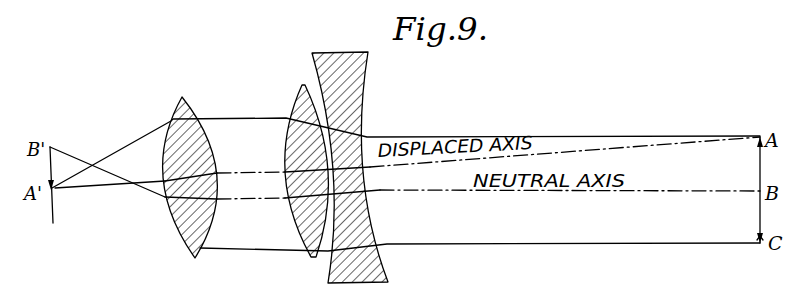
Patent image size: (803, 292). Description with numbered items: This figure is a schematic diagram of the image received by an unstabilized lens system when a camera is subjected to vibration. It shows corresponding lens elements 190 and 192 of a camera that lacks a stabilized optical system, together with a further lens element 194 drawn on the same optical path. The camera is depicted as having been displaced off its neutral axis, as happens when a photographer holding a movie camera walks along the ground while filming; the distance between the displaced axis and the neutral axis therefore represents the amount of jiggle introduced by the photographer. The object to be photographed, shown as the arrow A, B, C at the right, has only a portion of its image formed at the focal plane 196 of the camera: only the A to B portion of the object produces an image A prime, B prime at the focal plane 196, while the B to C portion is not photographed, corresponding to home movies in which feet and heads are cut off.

The lens element 190 is at (346, 52).
The lens element 192 is at (303, 85).
The biconvex lens element 194 is at (182, 97).
The focal plane 196 is at (196, 255).